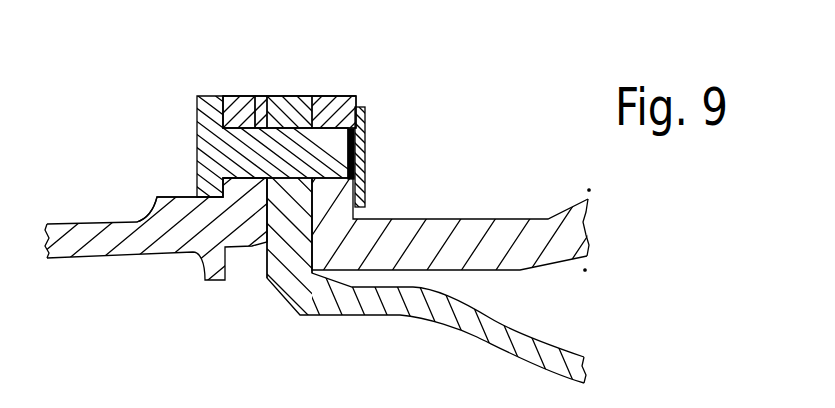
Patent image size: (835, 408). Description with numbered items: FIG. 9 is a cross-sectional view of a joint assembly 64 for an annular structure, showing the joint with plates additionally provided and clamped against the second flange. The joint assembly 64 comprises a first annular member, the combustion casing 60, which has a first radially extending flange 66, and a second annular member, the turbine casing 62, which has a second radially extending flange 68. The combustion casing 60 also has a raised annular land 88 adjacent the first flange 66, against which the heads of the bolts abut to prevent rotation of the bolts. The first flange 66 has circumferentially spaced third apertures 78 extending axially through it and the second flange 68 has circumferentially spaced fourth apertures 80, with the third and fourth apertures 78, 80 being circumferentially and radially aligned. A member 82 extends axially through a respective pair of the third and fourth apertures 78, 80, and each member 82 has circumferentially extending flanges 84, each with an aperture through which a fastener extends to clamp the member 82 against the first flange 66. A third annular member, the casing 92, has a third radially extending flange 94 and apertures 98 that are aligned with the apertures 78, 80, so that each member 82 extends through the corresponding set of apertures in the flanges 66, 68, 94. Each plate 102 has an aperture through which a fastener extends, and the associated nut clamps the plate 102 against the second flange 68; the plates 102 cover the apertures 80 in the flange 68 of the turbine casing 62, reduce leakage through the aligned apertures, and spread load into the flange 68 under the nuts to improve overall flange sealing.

The combustion casing 60 is at (83, 234).
The turbine casing 62 is at (505, 229).
The joint assembly 64 is at (404, 92).
The first radially extending flange 66 is at (245, 105).
The second radially extending flange 68 is at (340, 103).
The third aperture 78 is at (255, 96).
The fourth aperture 80 is at (320, 96).
The member 82 is at (340, 157).
The circumferentially extending flange 84 is at (197, 142).
The raised annular land 88 is at (173, 195).
The third annular member casing 92 is at (528, 348).
The third radially extending flange 94 is at (292, 100).
The aperture 98 is at (293, 178).
The plate 102 is at (365, 132).